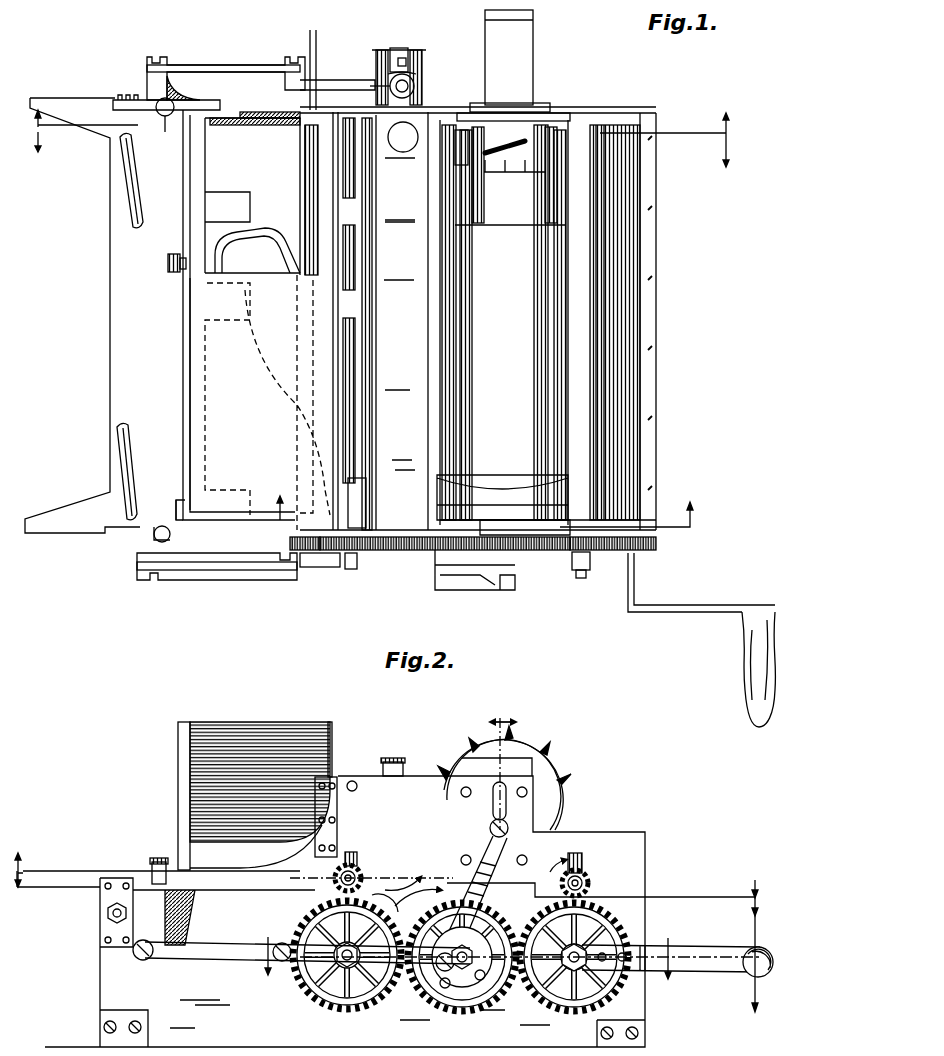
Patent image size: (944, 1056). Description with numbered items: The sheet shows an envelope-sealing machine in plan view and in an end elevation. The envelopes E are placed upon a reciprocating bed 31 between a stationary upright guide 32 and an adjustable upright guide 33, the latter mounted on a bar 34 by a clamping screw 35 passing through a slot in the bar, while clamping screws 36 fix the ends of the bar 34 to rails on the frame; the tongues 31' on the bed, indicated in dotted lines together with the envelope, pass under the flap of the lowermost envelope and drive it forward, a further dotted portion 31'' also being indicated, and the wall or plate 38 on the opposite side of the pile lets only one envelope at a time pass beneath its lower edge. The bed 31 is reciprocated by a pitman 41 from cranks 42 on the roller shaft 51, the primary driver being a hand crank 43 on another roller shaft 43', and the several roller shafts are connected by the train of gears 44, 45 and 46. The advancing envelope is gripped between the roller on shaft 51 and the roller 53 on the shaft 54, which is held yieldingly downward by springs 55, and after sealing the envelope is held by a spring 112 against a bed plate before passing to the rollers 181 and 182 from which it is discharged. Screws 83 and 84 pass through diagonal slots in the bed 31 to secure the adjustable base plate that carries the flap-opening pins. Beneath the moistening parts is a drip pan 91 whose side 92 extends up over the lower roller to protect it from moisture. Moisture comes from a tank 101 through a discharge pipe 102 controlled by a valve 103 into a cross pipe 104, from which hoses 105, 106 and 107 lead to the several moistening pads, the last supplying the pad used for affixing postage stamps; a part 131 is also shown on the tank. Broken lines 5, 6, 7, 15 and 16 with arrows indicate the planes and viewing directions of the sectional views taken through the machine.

In FIG. 1, the section line 5 5 is at (382, 138).
In FIG. 2, the section line 6 6 is at (389, 932).
In FIG. 2, the section line 7 is at (504, 761).
In FIG. 1, the section line 15 15 is at (486, 516).
In FIG. 2, the section line 16 16 is at (467, 958).
In FIG. 1, the reciprocating bed 31 is at (82, 315).
In FIG. 2, the reciprocating bed 31 is at (158, 856).
In FIG. 1, the tongues 31' is at (231, 196).
In FIG. 1, the frame portion 31'' is at (254, 352).
In FIG. 1, the stationary upright guide 32 is at (180, 498).
In FIG. 2, the stationary upright guide 32 is at (178, 778).
In FIG. 1, the adjustable upright guide 33 is at (187, 288).
In FIG. 1, the bar 34 is at (186, 370).
In FIG. 1, the clamping screw 35 is at (168, 265).
In FIG. 1, the clamping screws 36 is at (163, 526).
In FIG. 2, the clamping screws 36 is at (157, 860).
In FIG. 1, the wall or plate 38 is at (320, 184).
In FIG. 2, the wall or plate 38 is at (333, 745).
In FIG. 1, the pitman 41 is at (212, 64).
In FIG. 2, the pitman 41 is at (218, 940).
In FIG. 1, the cranks 42 is at (318, 590).
In FIG. 2, the cranks 42 is at (300, 962).
In FIG. 1, the hand crank 43 is at (701, 640).
In FIG. 2, the hand crank 43 is at (667, 978).
In FIG. 1, the roller shaft 43' is at (587, 587).
In FIG. 2, the roller shaft 43' is at (596, 892).
In FIG. 1, the gear 44 is at (640, 549).
In FIG. 2, the gear 44 is at (548, 1008).
In FIG. 1, the gear 45 is at (420, 552).
In FIG. 2, the gear 45 is at (422, 1002).
In FIG. 1, the gear 46 is at (288, 543).
In FIG. 2, the gear 46 is at (347, 971).
In FIG. 2, the roller shaft 51 is at (294, 1012).
In FIG. 1, the roller 53 is at (372, 258).
In FIG. 1, the shaft 54 is at (350, 570).
In FIG. 2, the shaft 54 is at (366, 870).
In FIG. 2, the springs 55 is at (353, 858).
In FIG. 1, the screw 83 is at (128, 516).
In FIG. 1, the screw 84 is at (134, 226).
In FIG. 1, the drip pan 91 is at (252, 195).
In FIG. 1, the drip pan side 92 is at (300, 152).
In FIG. 1, the tank 101 is at (406, 321).
In FIG. 1, the discharge pipe 102 is at (420, 60).
In FIG. 1, the valve 103 is at (416, 88).
In FIG. 1, the cross pipe 104 is at (394, 48).
In FIG. 1, the hose 105 is at (378, 62).
In FIG. 1, the hose 106 is at (378, 80).
In FIG. 1, the hose 107 is at (420, 76).
In FIG. 1, the spring 112 is at (360, 498).
In FIG. 1, the piston 131 is at (552, 178).
In FIG. 1, the roller 181 is at (616, 343).
In FIG. 1, the roller 182 is at (598, 386).
In FIG. 1, the envelop E is at (252, 310).
In FIG. 2, the envelop E is at (248, 730).